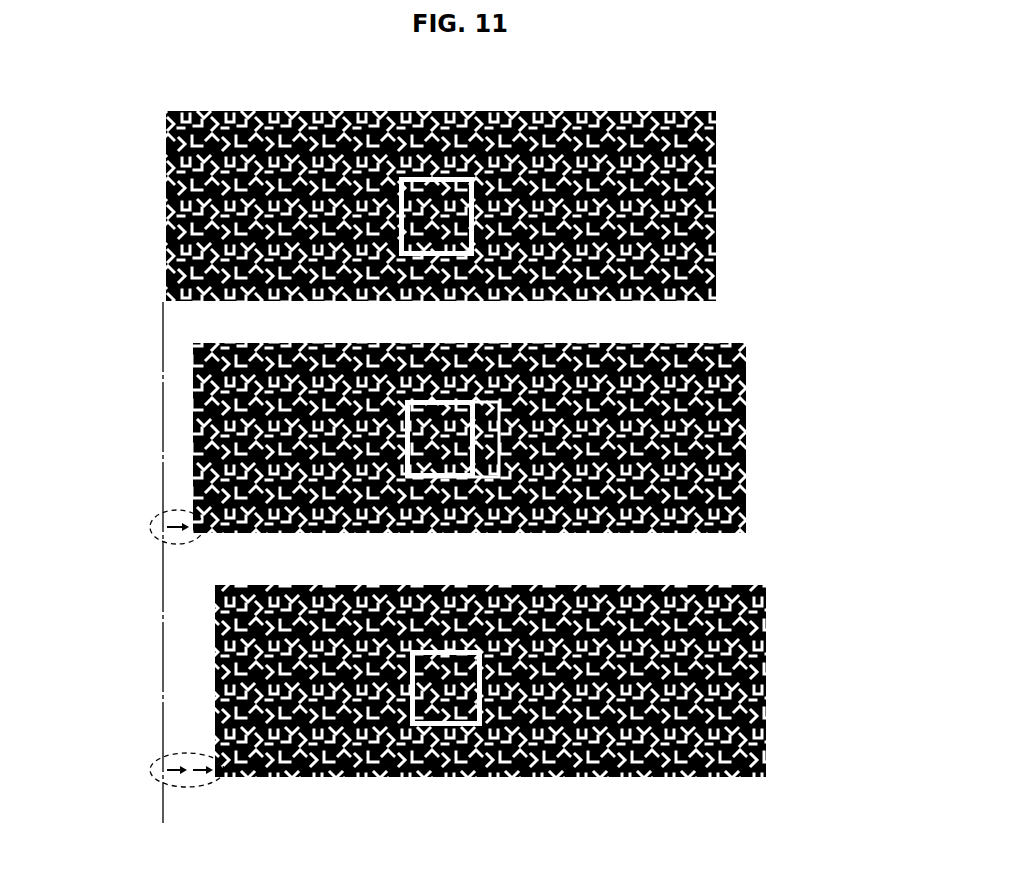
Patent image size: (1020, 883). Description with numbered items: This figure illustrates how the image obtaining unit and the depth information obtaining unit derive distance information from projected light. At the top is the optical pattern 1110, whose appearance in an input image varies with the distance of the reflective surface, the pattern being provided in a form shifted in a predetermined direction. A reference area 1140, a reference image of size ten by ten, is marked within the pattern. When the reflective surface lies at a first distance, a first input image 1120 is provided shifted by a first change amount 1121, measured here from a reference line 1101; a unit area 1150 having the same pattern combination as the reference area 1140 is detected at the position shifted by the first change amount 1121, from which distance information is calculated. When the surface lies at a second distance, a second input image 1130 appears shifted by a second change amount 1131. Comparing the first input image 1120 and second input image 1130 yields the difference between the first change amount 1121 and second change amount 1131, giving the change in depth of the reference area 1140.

The reference line 1101 is at (161, 431).
The optical pattern 1110 is at (716, 208).
The first input image 1120 is at (746, 438).
The second input image 1130 is at (766, 686).
The reference area 1140 is at (437, 177).
The unit area 1150 is at (484, 400).
The first change amount 1121 is at (152, 526).
The second change amount 1131 is at (152, 770).